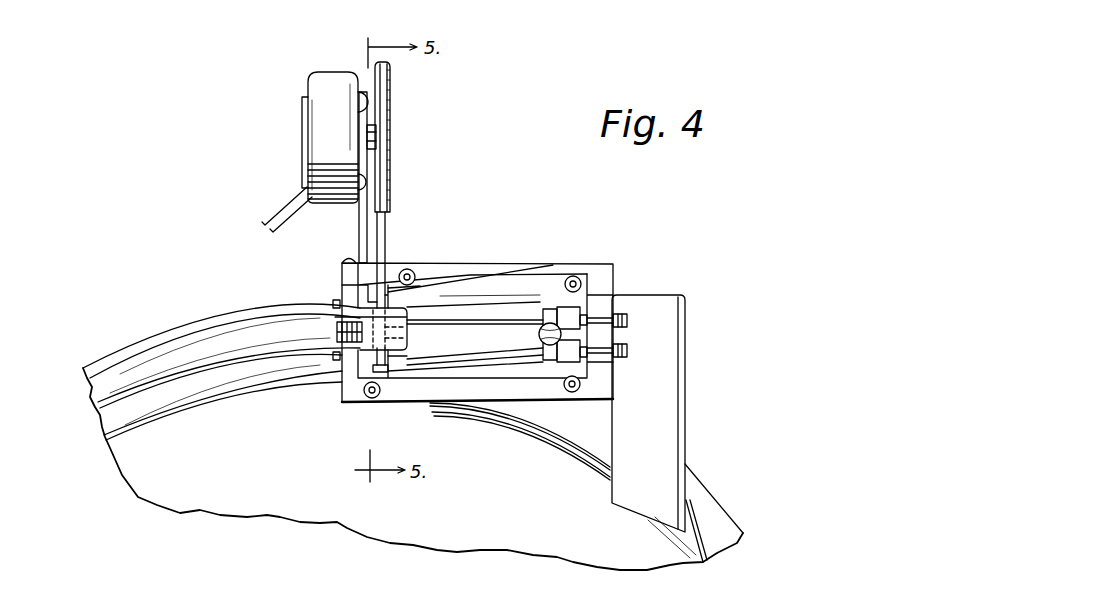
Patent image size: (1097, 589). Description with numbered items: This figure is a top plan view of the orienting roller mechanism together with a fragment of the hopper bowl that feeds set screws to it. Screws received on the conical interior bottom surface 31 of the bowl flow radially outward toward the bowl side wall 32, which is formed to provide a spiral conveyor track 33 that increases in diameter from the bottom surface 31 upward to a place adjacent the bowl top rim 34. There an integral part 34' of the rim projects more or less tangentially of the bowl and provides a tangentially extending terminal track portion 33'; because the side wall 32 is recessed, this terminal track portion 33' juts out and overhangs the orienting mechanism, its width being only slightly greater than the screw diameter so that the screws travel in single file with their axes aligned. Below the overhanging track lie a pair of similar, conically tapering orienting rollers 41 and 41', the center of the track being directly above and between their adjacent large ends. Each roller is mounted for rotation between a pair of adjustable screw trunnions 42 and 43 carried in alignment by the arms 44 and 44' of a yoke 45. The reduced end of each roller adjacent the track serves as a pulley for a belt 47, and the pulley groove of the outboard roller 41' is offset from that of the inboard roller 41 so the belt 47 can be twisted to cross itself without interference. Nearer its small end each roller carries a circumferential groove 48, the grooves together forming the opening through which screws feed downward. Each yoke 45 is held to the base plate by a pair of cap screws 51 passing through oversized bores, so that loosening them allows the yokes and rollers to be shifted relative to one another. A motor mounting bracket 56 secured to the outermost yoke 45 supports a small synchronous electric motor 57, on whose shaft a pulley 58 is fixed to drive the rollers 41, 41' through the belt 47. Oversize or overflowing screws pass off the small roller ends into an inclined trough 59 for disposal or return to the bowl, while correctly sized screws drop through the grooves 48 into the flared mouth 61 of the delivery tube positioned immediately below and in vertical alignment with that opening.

The conical interior bottom surface 31 is at (308, 500).
The bowl side wall 32 is at (727, 512).
The spiral conveyor track 33 is at (221, 397).
The terminal track portion 33' is at (437, 294).
The bowl top rim 34 is at (221, 343).
The integral rim part 34' is at (401, 295).
The inboard orienting roller 41 is at (465, 411).
The outboard orienting roller 41' is at (490, 273).
The adjustable screw trunnion 42 is at (333, 357).
The adjustable screw trunnion 43 is at (626, 348).
The yoke arm 44 is at (454, 339).
The yoke arm 44' is at (625, 324).
The yoke 45 is at (463, 397).
The belt 47 is at (386, 228).
The circumferential roller groove 48 is at (553, 364).
The cap screw 51 is at (370, 400).
The motor mounting bracket 56 is at (358, 222).
The synchronous electric motor 57 is at (333, 148).
The pulley 58 is at (390, 177).
The inclined trough 59 is at (688, 395).
The flared mouth 61 is at (538, 345).